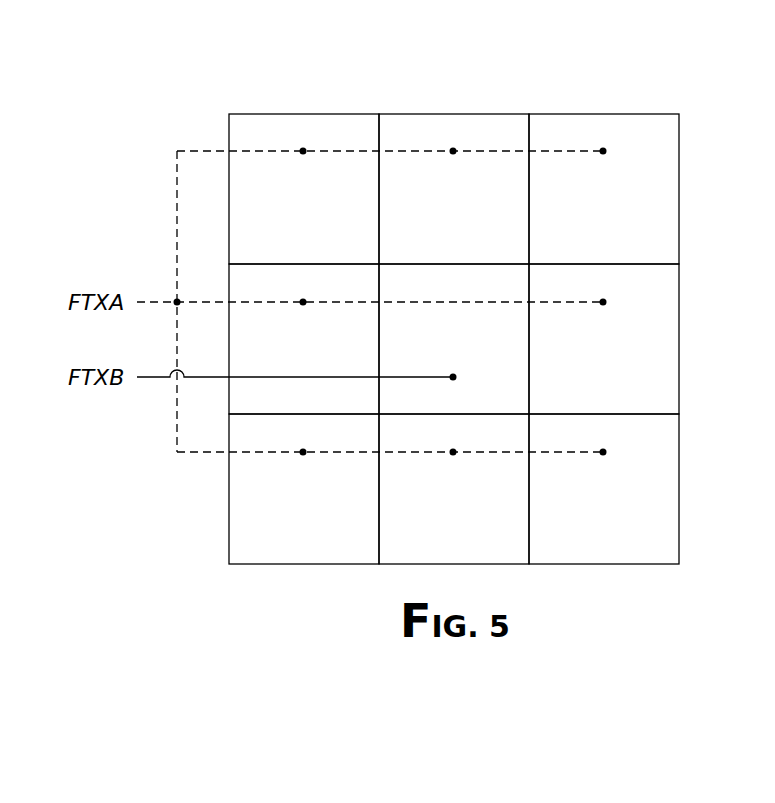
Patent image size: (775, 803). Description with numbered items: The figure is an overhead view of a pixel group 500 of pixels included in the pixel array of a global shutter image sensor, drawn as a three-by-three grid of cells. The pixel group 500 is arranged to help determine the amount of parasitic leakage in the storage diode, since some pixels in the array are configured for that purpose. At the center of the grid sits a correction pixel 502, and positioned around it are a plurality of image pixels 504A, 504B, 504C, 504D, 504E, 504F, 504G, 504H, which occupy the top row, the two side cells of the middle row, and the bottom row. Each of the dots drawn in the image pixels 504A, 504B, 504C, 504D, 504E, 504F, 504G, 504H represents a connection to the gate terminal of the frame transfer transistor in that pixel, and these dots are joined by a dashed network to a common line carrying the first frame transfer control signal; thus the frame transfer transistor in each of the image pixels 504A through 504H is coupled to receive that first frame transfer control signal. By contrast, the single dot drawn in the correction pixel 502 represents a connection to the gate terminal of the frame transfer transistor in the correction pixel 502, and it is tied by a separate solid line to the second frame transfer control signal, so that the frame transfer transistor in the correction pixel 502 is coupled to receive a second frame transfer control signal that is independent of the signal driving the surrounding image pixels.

The pixel group 500 is at (584, 91).
The correction pixel 502 is at (430, 354).
The image pixel 504A is at (272, 204).
The image pixel 504B is at (422, 204).
The image pixel 504C is at (572, 204).
The image pixel 504D is at (272, 354).
The image pixel 504E is at (572, 354).
The image pixel 504F is at (272, 504).
The image pixel 504G is at (422, 504).
The image pixel 504H is at (572, 504).